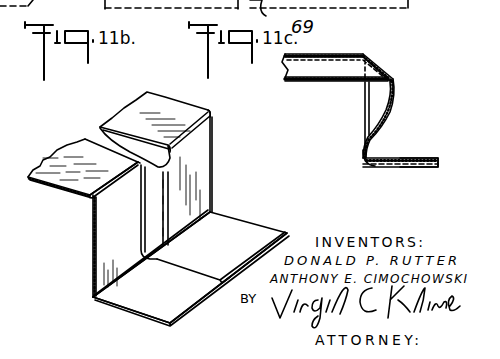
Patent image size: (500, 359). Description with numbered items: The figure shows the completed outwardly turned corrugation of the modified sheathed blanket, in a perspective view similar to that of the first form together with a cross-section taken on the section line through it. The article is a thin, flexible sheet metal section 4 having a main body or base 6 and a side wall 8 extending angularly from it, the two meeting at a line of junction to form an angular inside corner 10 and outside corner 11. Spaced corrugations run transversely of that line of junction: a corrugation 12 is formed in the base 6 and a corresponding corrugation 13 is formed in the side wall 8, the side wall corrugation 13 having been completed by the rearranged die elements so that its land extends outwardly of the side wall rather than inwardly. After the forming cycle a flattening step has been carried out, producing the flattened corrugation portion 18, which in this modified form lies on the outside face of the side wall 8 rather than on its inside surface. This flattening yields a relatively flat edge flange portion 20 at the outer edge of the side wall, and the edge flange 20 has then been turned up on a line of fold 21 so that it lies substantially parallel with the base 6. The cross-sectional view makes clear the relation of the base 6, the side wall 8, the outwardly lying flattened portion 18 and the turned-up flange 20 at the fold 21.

In FIG. 11B, the sheet metal section 4 is at (55, 162).
In FIG. 11C, the sheet metal section 4 is at (336, 79).
In FIG. 11B, the base portion 6 is at (177, 110).
In FIG. 11C, the base portion 6 is at (312, 53).
In FIG. 11B, the side wall 8 is at (107, 243).
In FIG. 11B, the inside corner 10 is at (88, 201).
In FIG. 11B, the outside corner 11 is at (211, 118).
In FIG. 11B, the base corrugation 12 is at (118, 147).
In FIG. 11C, the base corrugation 12 is at (330, 75).
In FIG. 11B, the side wall corrugation 13 is at (162, 195).
In FIG. 11C, the side wall corrugation 13 is at (385, 98).
In FIG. 11B, the flattened corrugation portion 18 is at (213, 268).
In FIG. 11C, the flattened corrugation portion 18 is at (403, 158).
In FIG. 11B, the edge flange portion 20 is at (153, 307).
In FIG. 11C, the edge flange portion 20 is at (413, 170).
In FIG. 11B, the line of fold 21 is at (103, 290).
In FIG. 11C, the line of fold 21 is at (365, 170).